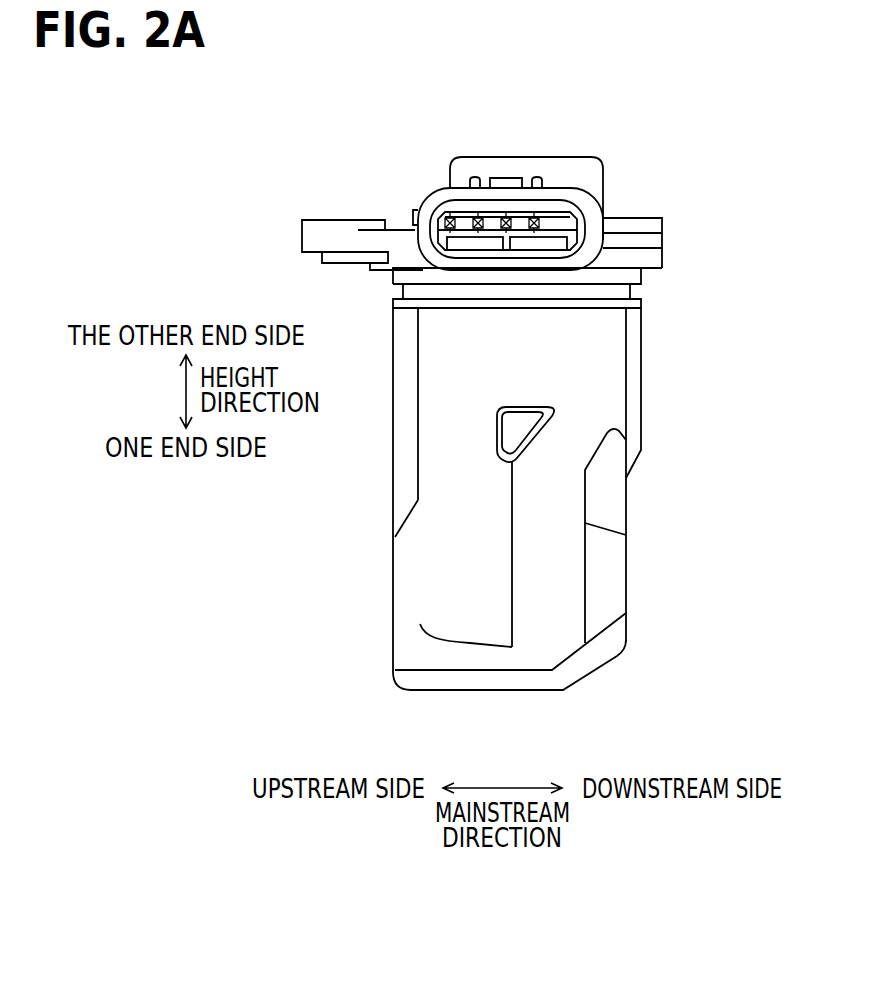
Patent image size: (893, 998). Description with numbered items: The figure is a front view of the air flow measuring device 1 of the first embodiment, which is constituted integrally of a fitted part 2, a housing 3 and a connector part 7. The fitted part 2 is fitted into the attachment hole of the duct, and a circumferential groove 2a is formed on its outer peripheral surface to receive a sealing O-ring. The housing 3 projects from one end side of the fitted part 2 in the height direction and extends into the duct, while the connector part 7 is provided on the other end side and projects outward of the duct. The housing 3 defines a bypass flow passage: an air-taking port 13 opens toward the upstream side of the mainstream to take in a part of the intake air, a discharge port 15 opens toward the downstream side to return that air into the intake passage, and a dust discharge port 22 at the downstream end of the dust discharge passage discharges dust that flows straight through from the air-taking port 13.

The flow measuring device 1 is at (380, 146).
The fitted part 2 is at (641, 278).
The circumferential groove 2a is at (630, 292).
The housing 3 is at (602, 410).
The connector part 7 is at (570, 164).
The air-taking port 13 is at (393, 582).
The discharge port 15 is at (512, 595).
The dust discharge port 22 is at (627, 566).